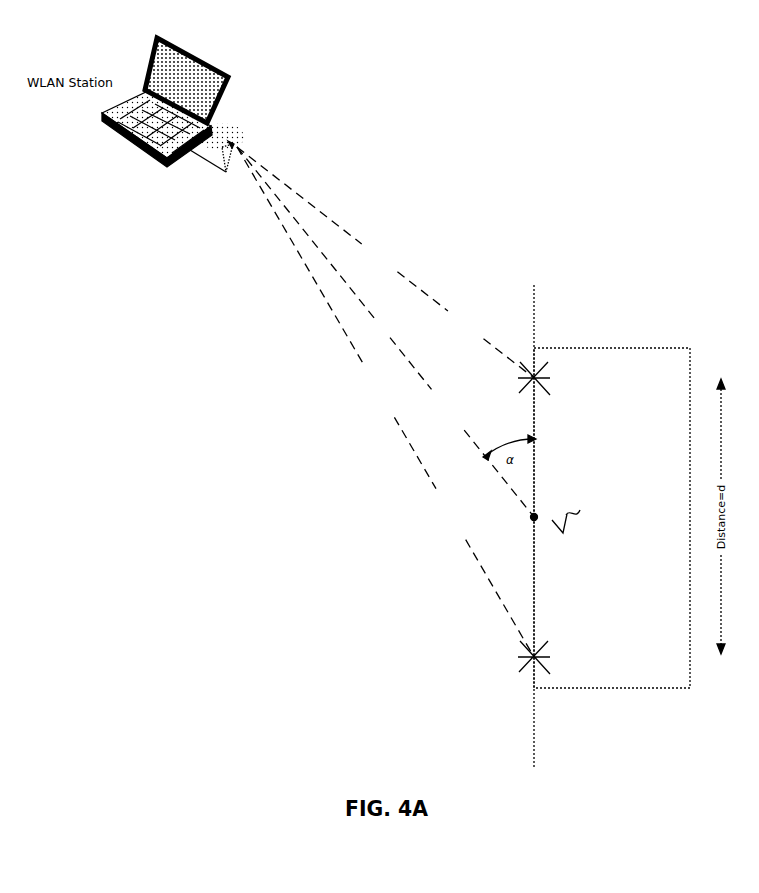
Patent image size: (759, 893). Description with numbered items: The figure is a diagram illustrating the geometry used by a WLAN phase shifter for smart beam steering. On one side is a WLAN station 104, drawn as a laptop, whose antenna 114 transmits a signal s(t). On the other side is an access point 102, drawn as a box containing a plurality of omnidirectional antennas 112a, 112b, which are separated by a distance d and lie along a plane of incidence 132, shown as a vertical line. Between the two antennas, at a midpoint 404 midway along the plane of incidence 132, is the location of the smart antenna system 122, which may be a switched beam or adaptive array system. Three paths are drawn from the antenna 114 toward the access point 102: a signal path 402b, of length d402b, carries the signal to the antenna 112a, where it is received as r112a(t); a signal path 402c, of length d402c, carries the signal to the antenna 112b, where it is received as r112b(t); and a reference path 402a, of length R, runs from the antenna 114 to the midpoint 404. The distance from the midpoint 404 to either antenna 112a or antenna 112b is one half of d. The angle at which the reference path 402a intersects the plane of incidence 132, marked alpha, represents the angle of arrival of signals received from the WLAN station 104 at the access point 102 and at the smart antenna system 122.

The WLAN station 104 is at (152, 52).
The antenna 114 is at (213, 160).
The reference path 402a is at (385, 332).
The signal path 402b is at (385, 262).
The signal path 402c is at (385, 402).
The access point 102 is at (617, 688).
The plane of incidence 132 is at (535, 741).
The omnidirectional antenna 112a is at (542, 377).
The omnidirectional antenna 112b is at (542, 656).
The midpoint 404 is at (530, 518).
The smart antenna system 122 is at (575, 520).